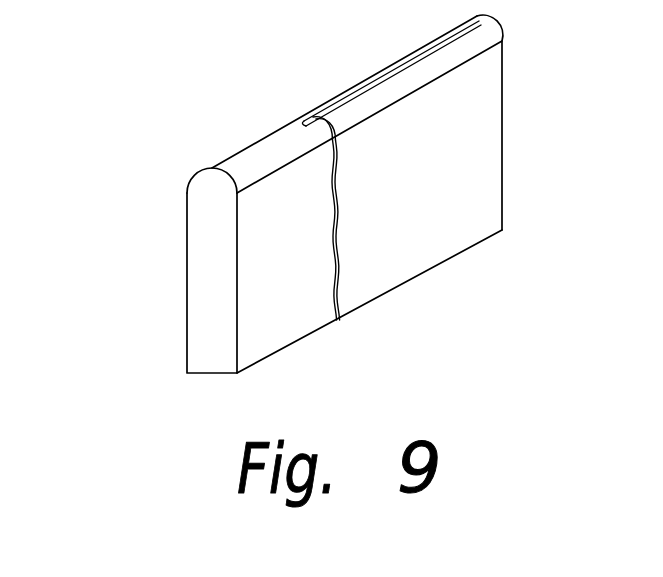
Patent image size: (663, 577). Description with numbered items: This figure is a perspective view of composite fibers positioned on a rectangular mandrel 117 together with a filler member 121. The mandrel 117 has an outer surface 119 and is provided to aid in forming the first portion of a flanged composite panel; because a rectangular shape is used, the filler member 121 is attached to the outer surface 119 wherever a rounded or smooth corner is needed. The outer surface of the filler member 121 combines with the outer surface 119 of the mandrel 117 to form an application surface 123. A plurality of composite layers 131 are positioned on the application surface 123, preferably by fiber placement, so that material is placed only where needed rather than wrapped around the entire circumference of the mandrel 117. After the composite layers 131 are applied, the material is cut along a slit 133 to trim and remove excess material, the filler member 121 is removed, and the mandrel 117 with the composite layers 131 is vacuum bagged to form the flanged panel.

The mandrel 117 is at (187, 307).
The outer surface 119 is at (282, 315).
The filler member 121 is at (199, 176).
The application surface 123 is at (276, 195).
The composite layers 131 is at (340, 285).
The slit 133 is at (385, 77).